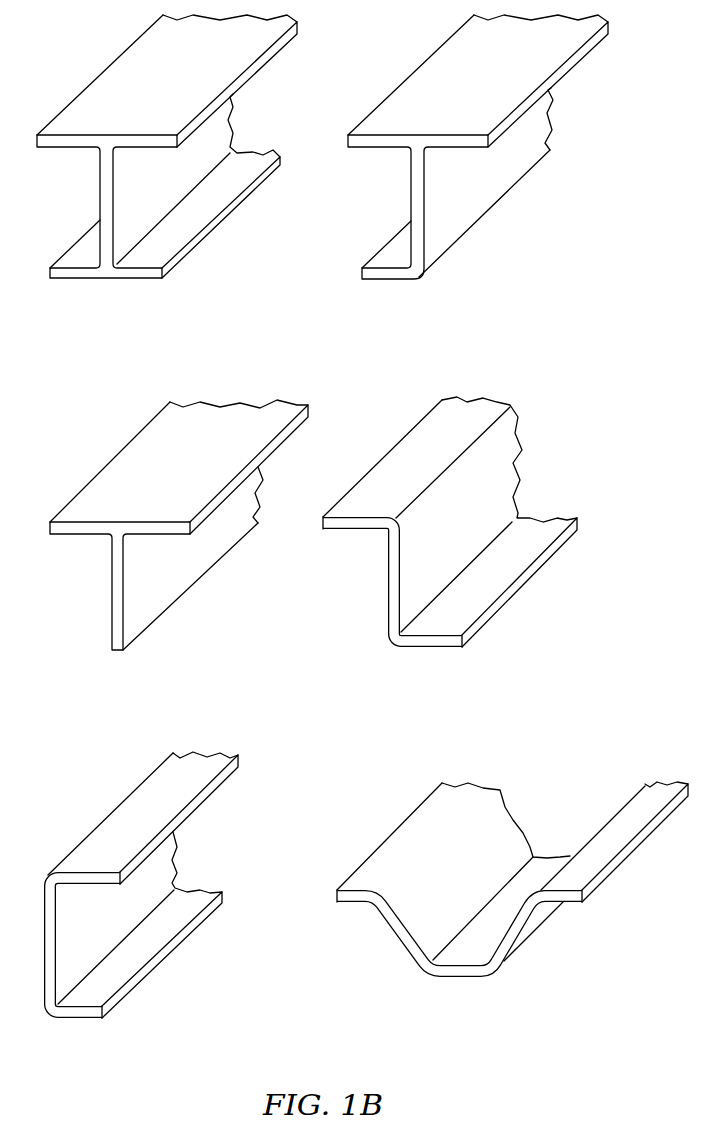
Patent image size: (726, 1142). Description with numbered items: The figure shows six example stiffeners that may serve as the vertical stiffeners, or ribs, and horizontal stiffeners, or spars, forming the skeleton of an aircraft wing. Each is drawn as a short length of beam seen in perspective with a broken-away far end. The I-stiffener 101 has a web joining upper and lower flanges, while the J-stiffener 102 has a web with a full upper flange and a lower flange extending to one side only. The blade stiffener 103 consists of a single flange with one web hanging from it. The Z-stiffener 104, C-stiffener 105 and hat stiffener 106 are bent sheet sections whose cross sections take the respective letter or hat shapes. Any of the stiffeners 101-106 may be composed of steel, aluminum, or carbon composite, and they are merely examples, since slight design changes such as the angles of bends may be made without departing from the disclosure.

The I-stiffener 101 is at (167, 180).
The J-stiffener 102 is at (478, 180).
The blade stiffener 103 is at (170, 558).
The Z-stiffener 104 is at (450, 554).
The C-stiffener 105 is at (127, 918).
The hat stiffener 106 is at (512, 910).